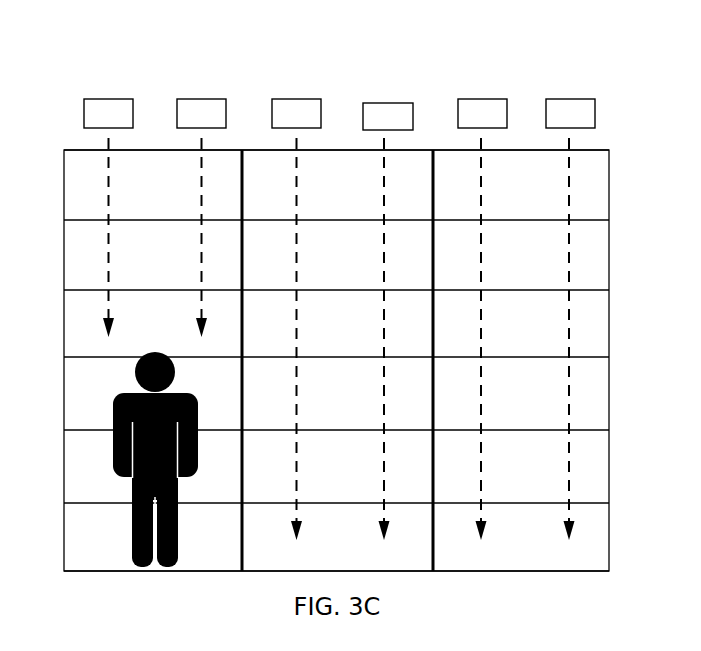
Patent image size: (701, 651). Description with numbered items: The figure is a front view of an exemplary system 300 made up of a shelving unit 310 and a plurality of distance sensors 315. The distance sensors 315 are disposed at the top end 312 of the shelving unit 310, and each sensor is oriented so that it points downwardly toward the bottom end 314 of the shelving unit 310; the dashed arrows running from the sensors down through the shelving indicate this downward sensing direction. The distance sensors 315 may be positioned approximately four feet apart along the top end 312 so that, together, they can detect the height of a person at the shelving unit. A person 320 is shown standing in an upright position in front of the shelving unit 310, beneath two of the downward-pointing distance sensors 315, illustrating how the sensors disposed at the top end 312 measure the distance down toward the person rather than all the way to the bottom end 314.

The system 300 is at (571, 66).
The shelving unit 310 is at (620, 325).
The top end 312 is at (78, 150).
The bottom end 314 is at (88, 571).
The distance sensors 315 is at (339, 319).
The person 320 is at (118, 477).